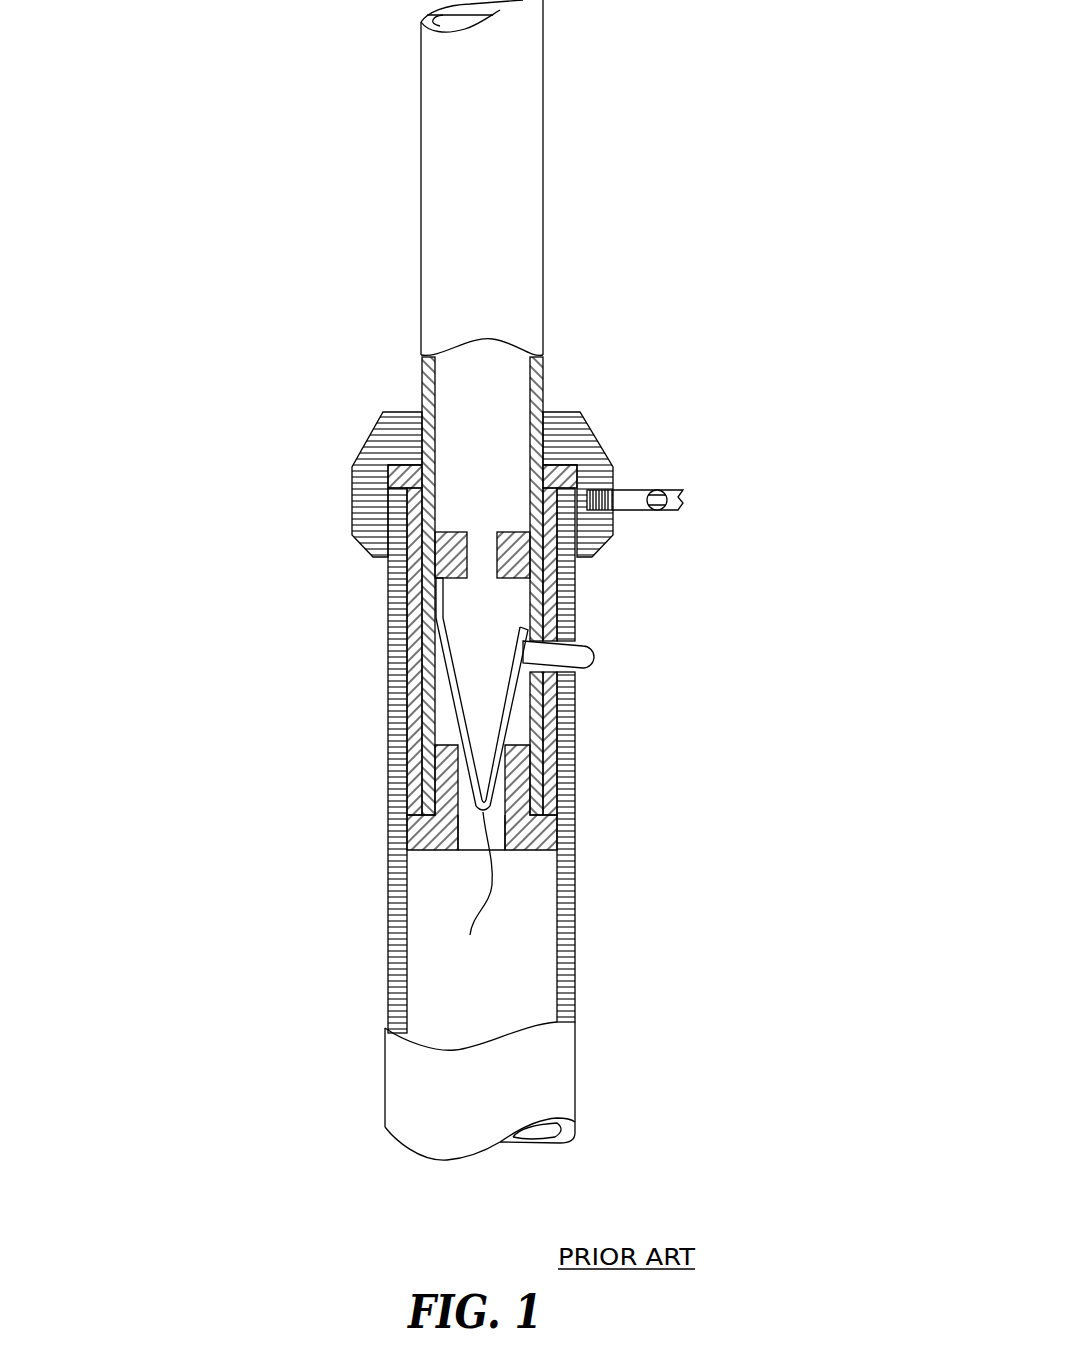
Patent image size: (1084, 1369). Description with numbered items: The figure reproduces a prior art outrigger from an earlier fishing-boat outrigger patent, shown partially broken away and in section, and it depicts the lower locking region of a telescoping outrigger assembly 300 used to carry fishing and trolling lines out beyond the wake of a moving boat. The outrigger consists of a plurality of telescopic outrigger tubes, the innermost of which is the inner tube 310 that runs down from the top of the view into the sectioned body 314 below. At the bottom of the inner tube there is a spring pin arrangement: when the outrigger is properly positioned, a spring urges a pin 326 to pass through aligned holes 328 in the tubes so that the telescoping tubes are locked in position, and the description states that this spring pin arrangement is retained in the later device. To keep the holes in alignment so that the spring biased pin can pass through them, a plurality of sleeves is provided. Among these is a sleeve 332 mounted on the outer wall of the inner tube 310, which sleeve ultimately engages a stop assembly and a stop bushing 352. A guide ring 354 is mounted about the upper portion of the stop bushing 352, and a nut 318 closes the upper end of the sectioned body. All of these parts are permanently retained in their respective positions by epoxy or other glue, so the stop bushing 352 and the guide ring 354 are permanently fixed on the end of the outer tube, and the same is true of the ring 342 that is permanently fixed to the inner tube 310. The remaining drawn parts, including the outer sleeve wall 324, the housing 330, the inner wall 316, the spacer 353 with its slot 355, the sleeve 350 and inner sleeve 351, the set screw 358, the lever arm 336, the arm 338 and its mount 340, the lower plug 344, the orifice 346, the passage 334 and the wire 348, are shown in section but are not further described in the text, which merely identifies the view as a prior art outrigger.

The pressure relief valve assembly 300 is at (372, 338).
The inner tube 310 is at (558, 68).
The valve body assembly 314 is at (590, 723).
The inner tube 316 is at (472, 707).
The nut 318 is at (378, 443).
The outer sleeve 324 is at (567, 695).
The pin 326 is at (592, 655).
The pin hole 328 is at (580, 642).
The housing 330 is at (388, 587).
The sleeve 332 is at (398, 648).
The outlet passage 334 is at (472, 807).
The lever arm 336 is at (507, 688).
The needle arm 338 is at (448, 635).
The needle mount 340 is at (440, 595).
The ring 342 is at (530, 837).
The lower plug 344 is at (412, 822).
The orifice 346 is at (493, 828).
The wire 348 is at (493, 888).
The sleeve 350 is at (573, 573).
The inner sleeve 351 is at (560, 610).
The stop bushing 352 is at (557, 458).
The spacer 353 is at (448, 530).
The guide ring 354 is at (578, 410).
The slot 355 is at (478, 532).
The set screw 358 is at (647, 490).